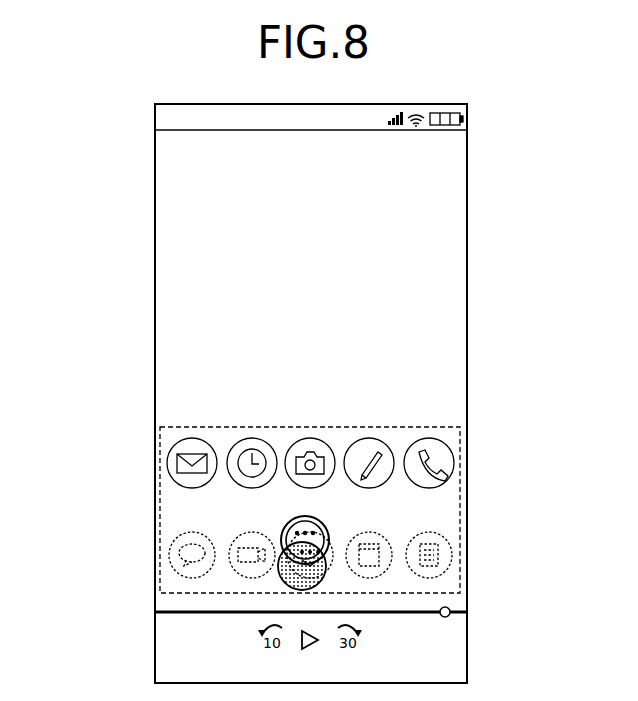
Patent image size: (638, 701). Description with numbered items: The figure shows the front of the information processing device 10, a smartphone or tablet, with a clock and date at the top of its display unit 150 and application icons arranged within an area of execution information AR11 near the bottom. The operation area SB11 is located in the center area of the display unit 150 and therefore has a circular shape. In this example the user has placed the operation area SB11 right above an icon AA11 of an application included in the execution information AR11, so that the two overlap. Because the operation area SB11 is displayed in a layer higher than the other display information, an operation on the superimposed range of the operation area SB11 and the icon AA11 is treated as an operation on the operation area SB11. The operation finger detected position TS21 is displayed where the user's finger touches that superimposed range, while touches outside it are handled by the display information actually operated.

The information processing device 10 is at (418, 105).
The display unit 150 is at (372, 282).
The execution information AR11 is at (405, 420).
The icon AA11 is at (333, 552).
The operation area SB11 is at (278, 529).
The operation finger detected position TS21 is at (278, 586).